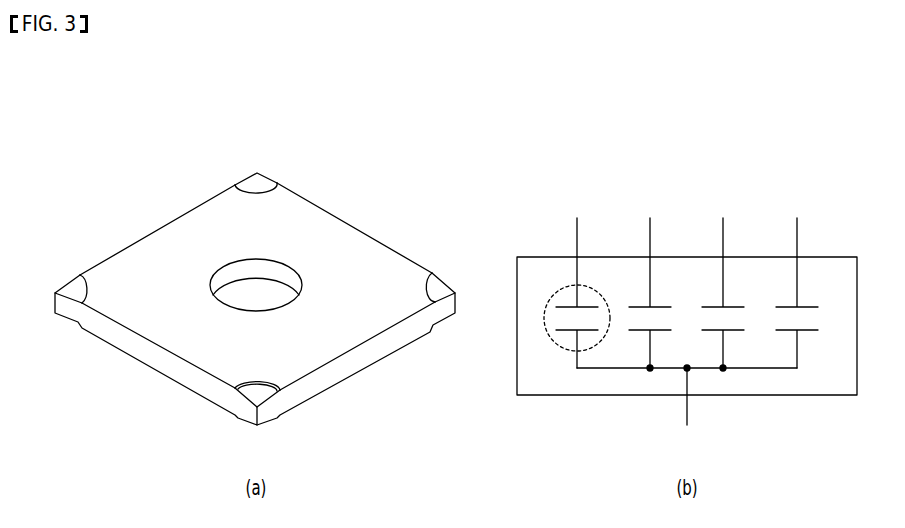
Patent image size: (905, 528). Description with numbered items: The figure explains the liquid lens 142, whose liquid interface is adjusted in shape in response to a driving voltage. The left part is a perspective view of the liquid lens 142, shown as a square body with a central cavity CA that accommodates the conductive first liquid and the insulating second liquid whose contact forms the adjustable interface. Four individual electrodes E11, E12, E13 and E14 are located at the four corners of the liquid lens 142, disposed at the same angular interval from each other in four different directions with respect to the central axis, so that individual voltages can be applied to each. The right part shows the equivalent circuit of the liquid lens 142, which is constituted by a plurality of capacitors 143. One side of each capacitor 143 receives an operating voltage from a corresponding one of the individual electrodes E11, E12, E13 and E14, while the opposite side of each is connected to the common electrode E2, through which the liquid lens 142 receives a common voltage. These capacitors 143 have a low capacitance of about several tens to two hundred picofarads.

The liquid lens 142 is at (456, 317).
The cavity CA is at (227, 232).
The individual electrode E11 is at (319, 280).
The individual electrode E12 is at (453, 325).
The individual electrode E13 is at (585, 281).
The individual electrode E14 is at (526, 258).
The capacitor 143 is at (543, 282).
The common electrode E2 is at (687, 411).